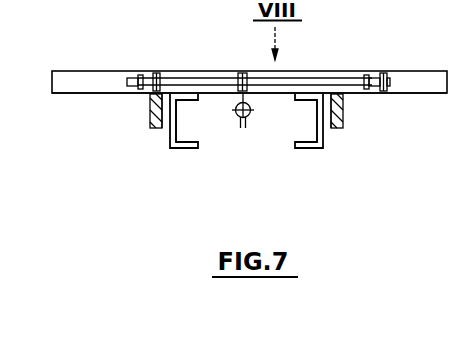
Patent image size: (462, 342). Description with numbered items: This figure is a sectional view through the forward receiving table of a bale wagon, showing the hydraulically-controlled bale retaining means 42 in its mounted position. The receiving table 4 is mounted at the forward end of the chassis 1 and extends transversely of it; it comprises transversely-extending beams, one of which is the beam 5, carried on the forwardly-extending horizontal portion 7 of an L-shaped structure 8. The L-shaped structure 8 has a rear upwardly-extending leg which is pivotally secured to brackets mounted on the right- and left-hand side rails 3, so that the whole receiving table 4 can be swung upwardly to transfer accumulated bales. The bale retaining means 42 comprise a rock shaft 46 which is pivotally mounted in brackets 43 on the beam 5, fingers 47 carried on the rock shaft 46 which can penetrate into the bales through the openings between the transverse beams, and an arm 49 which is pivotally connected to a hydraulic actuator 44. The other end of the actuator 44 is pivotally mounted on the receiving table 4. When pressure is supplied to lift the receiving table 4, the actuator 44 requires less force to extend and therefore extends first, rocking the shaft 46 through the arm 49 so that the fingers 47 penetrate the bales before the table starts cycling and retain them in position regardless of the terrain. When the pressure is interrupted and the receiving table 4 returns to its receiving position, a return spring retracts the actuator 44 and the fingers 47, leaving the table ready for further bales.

The chassis 1 is at (200, 148).
The side rails 3 is at (177, 148).
The receiving table 4 is at (112, 94).
The beam 5 is at (77, 94).
The horizontal portion 7 is at (155, 131).
The L-shaped structure 8 is at (149, 130).
The bale retaining means 42 is at (362, 103).
The brackets 43 is at (157, 72).
The hydraulic actuator 44 is at (252, 110).
The rock shaft 46 is at (310, 78).
The fingers 47 is at (140, 74).
The arm 49 is at (243, 128).